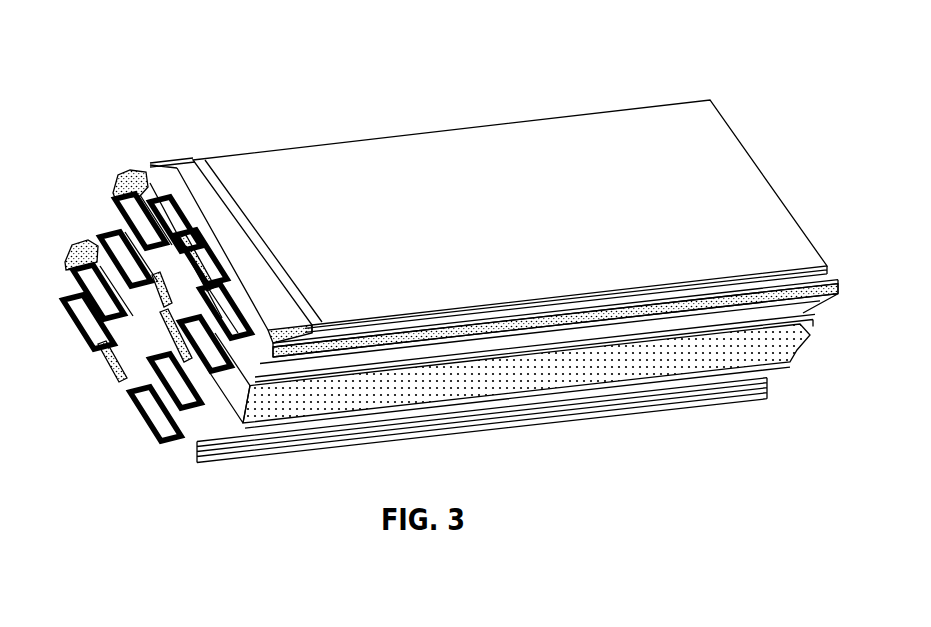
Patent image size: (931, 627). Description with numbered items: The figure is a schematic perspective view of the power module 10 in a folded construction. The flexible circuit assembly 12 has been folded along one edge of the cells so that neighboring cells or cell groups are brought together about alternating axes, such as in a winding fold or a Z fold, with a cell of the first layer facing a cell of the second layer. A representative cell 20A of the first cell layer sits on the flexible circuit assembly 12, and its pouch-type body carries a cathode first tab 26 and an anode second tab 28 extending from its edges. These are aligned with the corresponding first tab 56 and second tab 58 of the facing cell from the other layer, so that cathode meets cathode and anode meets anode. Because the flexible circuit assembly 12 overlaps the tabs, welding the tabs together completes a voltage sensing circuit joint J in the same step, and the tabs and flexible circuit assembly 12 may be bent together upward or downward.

The power module 10 is at (738, 49).
The flexible circuit assembly 12 is at (119, 157).
The cell 20A is at (510, 216).
The first tab 26 is at (222, 318).
The second tab 28 is at (158, 217).
The first tab 56 is at (148, 430).
The second tab 58 is at (118, 220).
The voltage sensing circuit joint J is at (129, 421).